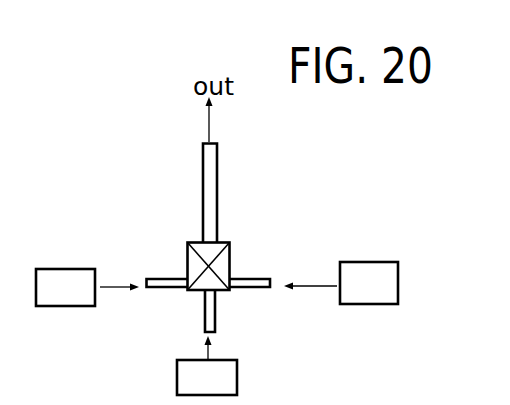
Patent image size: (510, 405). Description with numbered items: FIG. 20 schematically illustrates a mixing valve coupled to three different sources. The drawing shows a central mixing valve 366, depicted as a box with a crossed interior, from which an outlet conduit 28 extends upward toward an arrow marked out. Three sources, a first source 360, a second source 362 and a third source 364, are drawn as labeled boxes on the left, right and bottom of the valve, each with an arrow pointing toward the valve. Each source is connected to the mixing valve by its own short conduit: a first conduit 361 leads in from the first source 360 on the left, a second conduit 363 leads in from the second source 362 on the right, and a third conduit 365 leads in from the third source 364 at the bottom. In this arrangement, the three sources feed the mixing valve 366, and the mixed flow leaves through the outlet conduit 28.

The outlet conduit 28 is at (213, 155).
The first fluid source 360 is at (87, 287).
The first inlet channel 361 is at (158, 279).
The second fluid source 362 is at (341, 283).
The second inlet channel 363 is at (251, 287).
The third fluid source 364 is at (207, 365).
The third inlet channel 365 is at (203, 321).
The mixing junction 366 is at (222, 267).